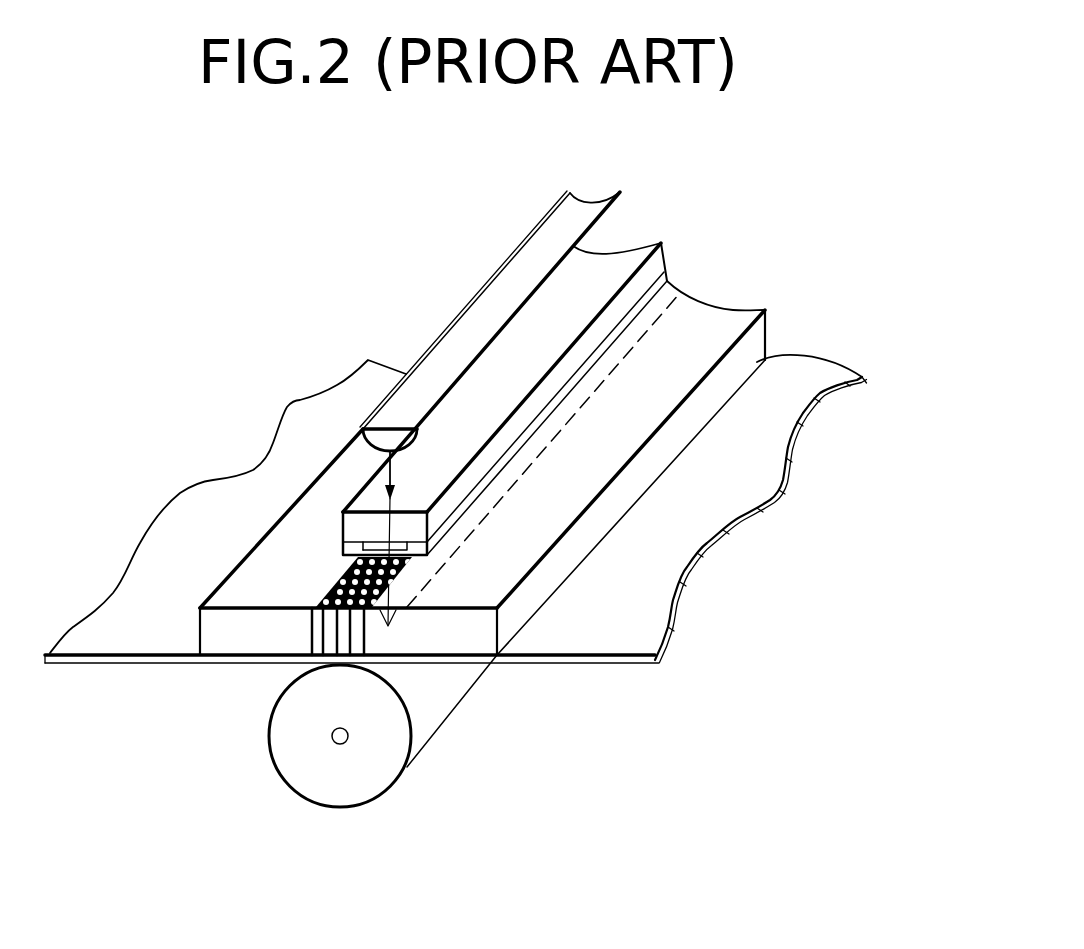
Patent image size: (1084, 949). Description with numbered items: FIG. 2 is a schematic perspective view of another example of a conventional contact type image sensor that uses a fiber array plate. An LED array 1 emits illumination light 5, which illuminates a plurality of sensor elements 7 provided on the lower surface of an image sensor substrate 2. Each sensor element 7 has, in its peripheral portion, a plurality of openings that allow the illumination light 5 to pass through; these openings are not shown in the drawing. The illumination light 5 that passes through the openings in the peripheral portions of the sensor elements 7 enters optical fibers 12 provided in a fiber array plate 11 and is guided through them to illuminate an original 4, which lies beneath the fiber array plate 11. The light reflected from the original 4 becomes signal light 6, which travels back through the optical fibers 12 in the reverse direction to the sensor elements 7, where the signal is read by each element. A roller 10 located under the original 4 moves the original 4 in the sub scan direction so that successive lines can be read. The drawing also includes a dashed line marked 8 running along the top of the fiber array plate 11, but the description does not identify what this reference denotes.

The LED array 1 is at (500, 300).
The image sensor substrate 2 is at (660, 265).
The original 4 is at (797, 380).
The illumination light 5 is at (383, 470).
The signal light 6 is at (328, 595).
The sensor elements 7 is at (363, 545).
The scanning track 8 is at (505, 463).
The roller 10 is at (387, 750).
The fiber array plate 11 is at (525, 603).
The optical fibers 12 is at (315, 633).